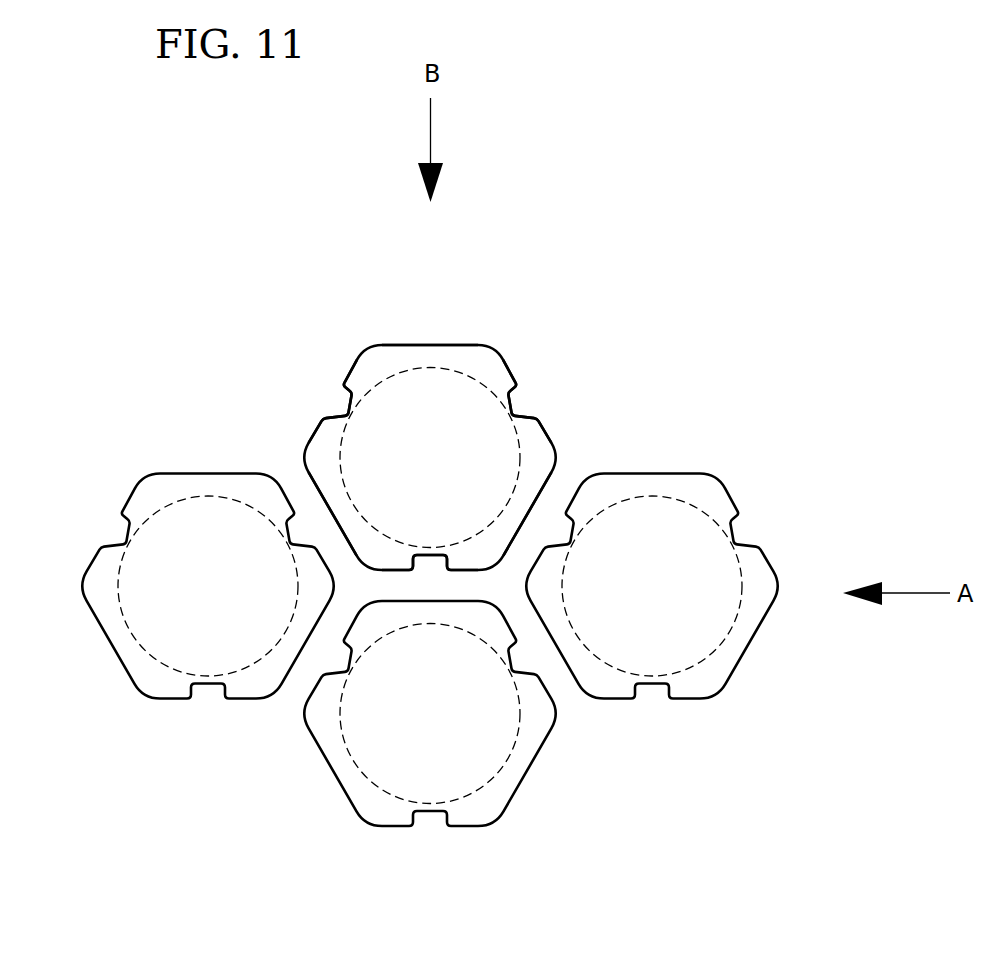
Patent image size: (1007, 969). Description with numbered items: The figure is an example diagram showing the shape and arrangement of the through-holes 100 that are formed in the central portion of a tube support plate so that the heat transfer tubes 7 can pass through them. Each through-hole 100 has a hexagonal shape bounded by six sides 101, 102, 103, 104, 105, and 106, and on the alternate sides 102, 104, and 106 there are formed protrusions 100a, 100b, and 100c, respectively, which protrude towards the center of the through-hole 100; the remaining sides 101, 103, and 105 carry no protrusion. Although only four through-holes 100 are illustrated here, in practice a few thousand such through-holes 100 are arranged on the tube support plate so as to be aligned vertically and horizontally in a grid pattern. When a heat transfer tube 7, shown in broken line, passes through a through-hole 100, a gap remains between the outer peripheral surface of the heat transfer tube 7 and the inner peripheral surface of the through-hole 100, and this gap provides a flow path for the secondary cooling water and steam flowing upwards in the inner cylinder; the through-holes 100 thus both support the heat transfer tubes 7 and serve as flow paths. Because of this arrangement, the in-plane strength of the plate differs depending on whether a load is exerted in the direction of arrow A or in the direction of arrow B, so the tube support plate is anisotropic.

The heat transfer tube 7 is at (520, 455).
The through-hole 100 is at (485, 358).
The protrusion 100a is at (335, 405).
The protrusion 100b is at (428, 562).
The protrusion 100c is at (522, 403).
The side 101 is at (425, 345).
The side 102 is at (350, 370).
The side 103 is at (305, 487).
The side 104 is at (390, 572).
The side 105 is at (520, 525).
The side 106 is at (512, 365).